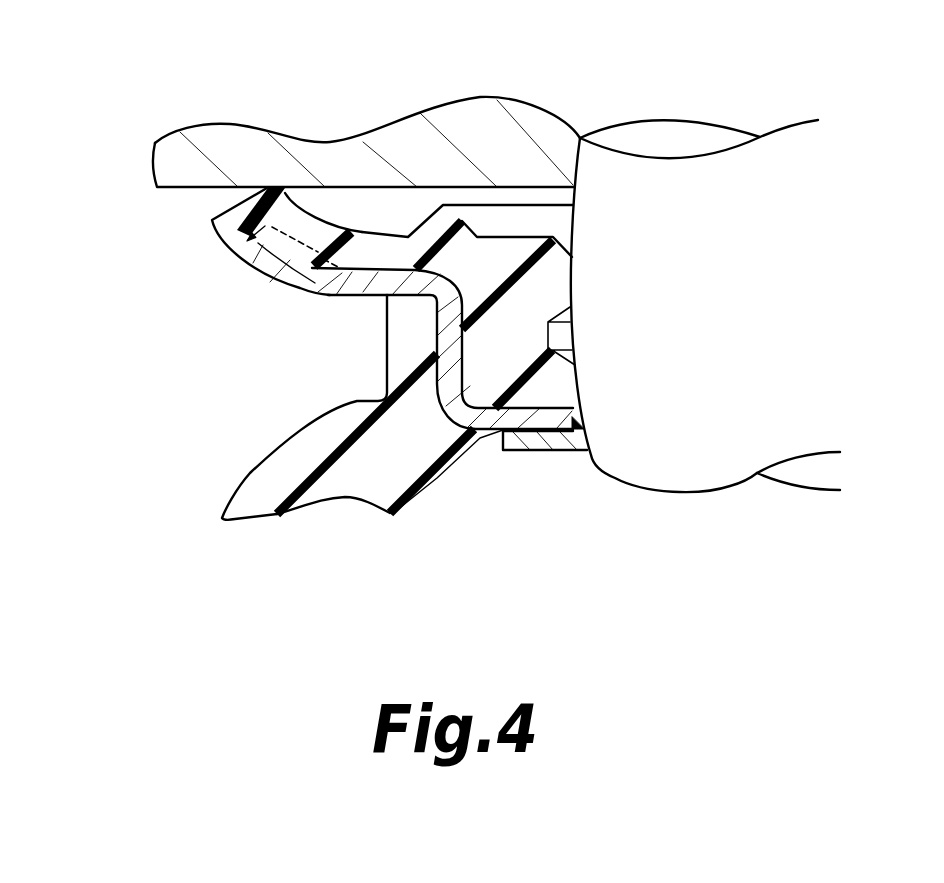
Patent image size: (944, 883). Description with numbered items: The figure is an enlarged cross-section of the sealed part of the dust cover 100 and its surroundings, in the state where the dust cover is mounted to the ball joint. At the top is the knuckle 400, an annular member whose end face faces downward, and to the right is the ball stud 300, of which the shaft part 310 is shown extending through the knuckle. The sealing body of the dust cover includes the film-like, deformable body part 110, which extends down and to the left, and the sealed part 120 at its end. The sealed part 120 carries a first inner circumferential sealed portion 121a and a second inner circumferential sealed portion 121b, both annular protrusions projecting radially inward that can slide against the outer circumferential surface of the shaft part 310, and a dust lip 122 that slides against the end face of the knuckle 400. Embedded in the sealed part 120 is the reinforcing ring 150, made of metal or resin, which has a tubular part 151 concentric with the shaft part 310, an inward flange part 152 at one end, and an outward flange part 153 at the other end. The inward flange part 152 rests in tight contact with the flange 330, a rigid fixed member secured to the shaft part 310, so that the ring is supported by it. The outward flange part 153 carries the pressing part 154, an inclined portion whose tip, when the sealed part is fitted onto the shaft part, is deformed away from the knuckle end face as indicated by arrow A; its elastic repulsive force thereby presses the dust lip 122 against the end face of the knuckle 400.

The dust cover 100 is at (194, 401).
The body part 110 is at (310, 508).
The sealed part 120 is at (231, 272).
The first inner circumferential sealed portion 121a is at (560, 286).
The second inner circumferential sealed portion 121b is at (567, 388).
The dust lip 122 is at (287, 215).
The reinforcing ring 150 is at (442, 316).
The tubular part 151 is at (447, 340).
The inward flange part 152 is at (527, 423).
The outward flange part 153 is at (395, 282).
The pressing part 154 is at (275, 270).
The ball stud 300 is at (693, 112).
The shaft part 310 is at (783, 153).
The flange 330 is at (563, 443).
The knuckle 400 is at (267, 143).